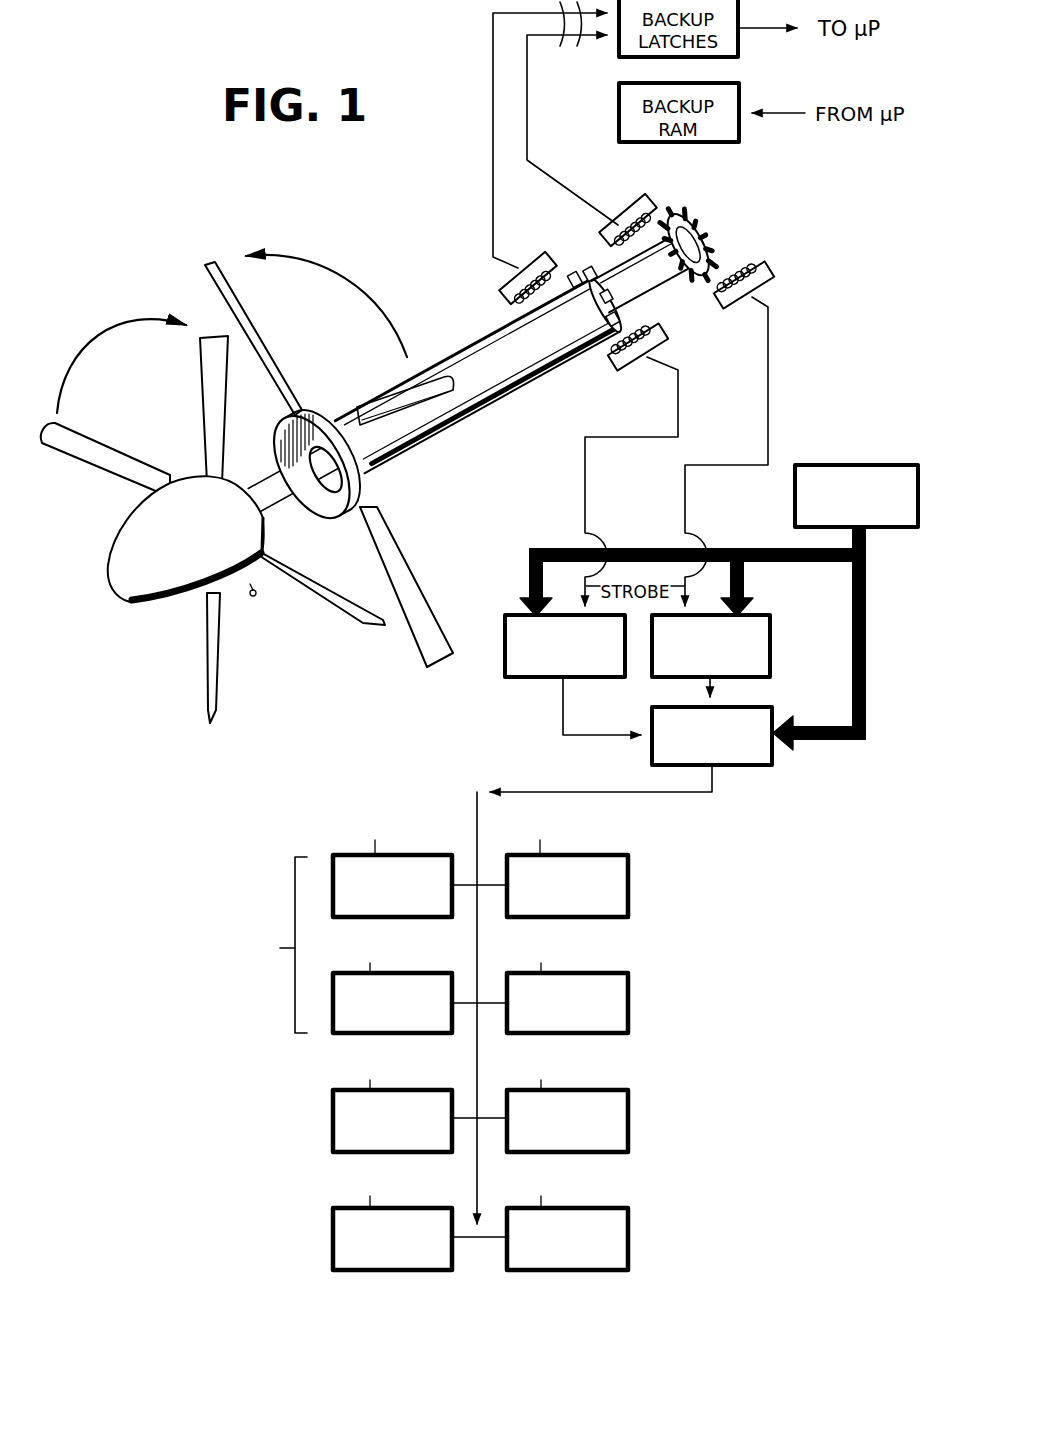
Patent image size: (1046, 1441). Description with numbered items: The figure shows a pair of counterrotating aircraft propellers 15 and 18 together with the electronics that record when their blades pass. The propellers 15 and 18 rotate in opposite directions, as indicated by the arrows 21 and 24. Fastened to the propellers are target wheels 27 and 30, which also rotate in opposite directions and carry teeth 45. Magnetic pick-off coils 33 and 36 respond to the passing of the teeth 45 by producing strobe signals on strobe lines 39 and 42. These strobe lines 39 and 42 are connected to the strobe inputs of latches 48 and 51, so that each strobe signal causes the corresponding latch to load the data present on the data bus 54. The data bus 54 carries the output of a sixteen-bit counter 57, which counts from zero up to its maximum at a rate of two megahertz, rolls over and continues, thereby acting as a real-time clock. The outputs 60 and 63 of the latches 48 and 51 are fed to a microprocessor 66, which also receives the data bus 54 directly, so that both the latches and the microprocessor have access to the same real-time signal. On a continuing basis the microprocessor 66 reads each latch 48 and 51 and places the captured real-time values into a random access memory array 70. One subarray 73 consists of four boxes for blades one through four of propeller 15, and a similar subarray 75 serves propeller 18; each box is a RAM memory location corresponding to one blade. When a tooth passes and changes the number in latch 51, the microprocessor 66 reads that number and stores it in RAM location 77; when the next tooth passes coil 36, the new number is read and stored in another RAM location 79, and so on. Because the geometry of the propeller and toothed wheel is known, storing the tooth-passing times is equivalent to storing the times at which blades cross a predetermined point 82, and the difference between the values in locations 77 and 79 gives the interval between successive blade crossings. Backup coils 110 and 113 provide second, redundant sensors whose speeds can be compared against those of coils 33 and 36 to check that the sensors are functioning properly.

The aircraft propeller 15 is at (222, 690).
The aircraft propeller 18 is at (417, 648).
The arrow 21 is at (88, 337).
The arrow 24 is at (352, 297).
The target wheel 27 is at (583, 252).
The target wheel 30 is at (705, 208).
The magnetic pick-off coil 33 is at (675, 349).
The magnetic pick-off coil 36 is at (783, 288).
The strobe line 39 is at (678, 393).
The strobe line 42 is at (768, 388).
The teeth 45 is at (572, 270).
The latch 48 is at (522, 683).
The latch 51 is at (773, 650).
The data bus 54 is at (757, 547).
The 16-bit counter 57 is at (862, 463).
The latch output 60 is at (563, 726).
The latch output 63 is at (716, 695).
The microprocessor 66 is at (748, 767).
The random access memory array 70 is at (501, 1091).
The RAM subarray 73 is at (379, 1091).
The RAM subarray 75 is at (510, 1318).
The RAM location 77 is at (333, 907).
The RAM location 79 is at (333, 1024).
The predetermined point 82 is at (253, 596).
The backup coil 110 is at (507, 296).
The backup coil 113 is at (660, 203).